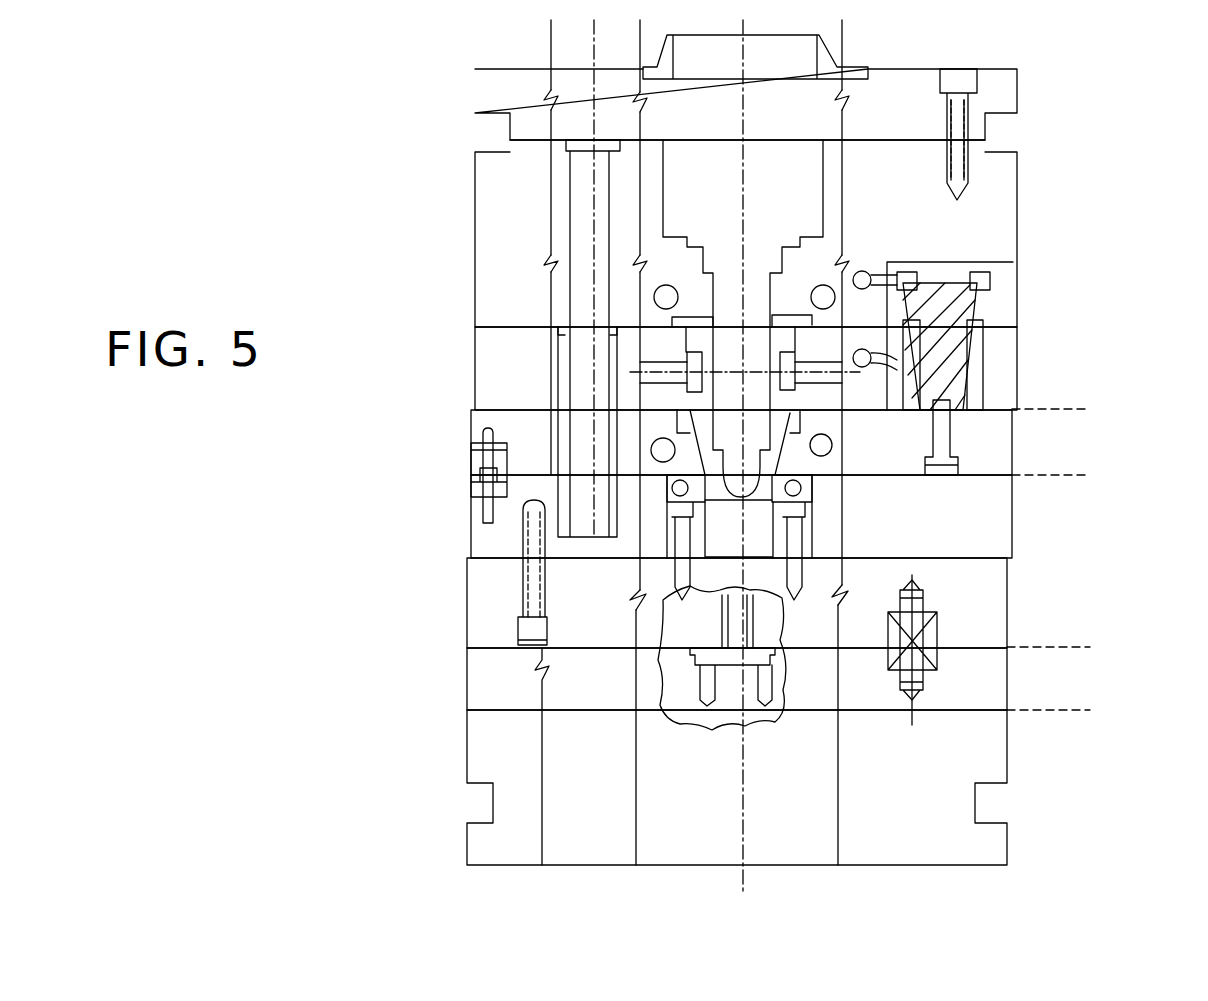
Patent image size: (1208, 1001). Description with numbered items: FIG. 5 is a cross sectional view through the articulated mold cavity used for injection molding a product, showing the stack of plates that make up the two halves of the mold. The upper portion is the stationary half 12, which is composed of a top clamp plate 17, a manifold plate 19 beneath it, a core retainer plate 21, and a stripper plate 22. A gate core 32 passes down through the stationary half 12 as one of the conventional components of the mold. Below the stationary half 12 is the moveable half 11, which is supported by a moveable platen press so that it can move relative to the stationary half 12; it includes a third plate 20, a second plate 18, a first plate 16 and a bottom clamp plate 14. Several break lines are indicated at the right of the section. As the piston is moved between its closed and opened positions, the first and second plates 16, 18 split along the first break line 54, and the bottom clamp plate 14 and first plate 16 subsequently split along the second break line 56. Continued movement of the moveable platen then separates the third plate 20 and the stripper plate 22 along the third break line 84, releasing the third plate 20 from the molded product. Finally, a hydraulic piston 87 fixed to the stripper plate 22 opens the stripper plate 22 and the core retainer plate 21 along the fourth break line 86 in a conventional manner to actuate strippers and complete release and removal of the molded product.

The top clamp plate 17 is at (472, 99).
The stationary half 12 is at (357, 201).
The manifold plate 19 is at (472, 203).
The core retainer plate 21 is at (472, 370).
The stripper plate 22 is at (470, 432).
The third plate 20 is at (470, 527).
The moveable half 11 is at (384, 654).
The second plate 18 is at (467, 634).
The first plate 16 is at (467, 686).
The bottom clamp plate 14 is at (467, 760).
The gate core 32 is at (762, 300).
The hydraulic piston 87 is at (1013, 345).
The fourth break line 86 is at (1073, 388).
The third break line 84 is at (1070, 465).
The first break line 54 is at (1062, 630).
The second break line 56 is at (1070, 693).